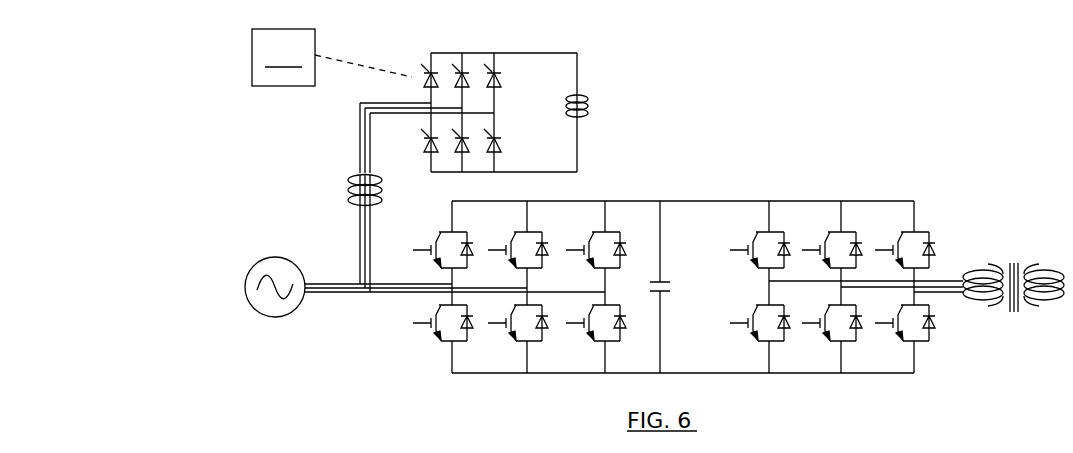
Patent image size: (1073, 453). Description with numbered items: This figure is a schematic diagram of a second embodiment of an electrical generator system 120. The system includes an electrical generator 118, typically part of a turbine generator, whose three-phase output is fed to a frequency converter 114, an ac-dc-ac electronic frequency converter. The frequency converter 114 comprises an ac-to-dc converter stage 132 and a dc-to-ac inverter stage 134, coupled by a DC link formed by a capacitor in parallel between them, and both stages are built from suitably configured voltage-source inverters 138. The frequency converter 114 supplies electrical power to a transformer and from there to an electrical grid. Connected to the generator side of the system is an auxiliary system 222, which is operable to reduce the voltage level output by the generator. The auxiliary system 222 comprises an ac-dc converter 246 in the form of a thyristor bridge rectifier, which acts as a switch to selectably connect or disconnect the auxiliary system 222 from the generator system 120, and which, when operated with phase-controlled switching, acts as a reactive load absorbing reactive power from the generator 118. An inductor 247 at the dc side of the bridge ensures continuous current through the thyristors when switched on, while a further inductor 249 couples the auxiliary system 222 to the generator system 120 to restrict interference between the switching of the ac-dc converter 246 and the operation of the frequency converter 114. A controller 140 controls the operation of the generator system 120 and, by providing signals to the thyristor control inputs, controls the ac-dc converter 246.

The controller 140 is at (332, 57).
The ac-dc converter 246 is at (517, 52).
The auxiliary system 222 is at (584, 76).
The inductor 247 is at (590, 108).
The inductor 249 is at (348, 193).
The electrical generator 118 is at (270, 316).
The frequency converter 114 is at (732, 202).
The voltage-source inverter 138 is at (850, 230).
The generator system 120 is at (948, 204).
The ac-to-dc converter stage 132 is at (490, 375).
The dc-to-ac inverter stage 134 is at (846, 280).